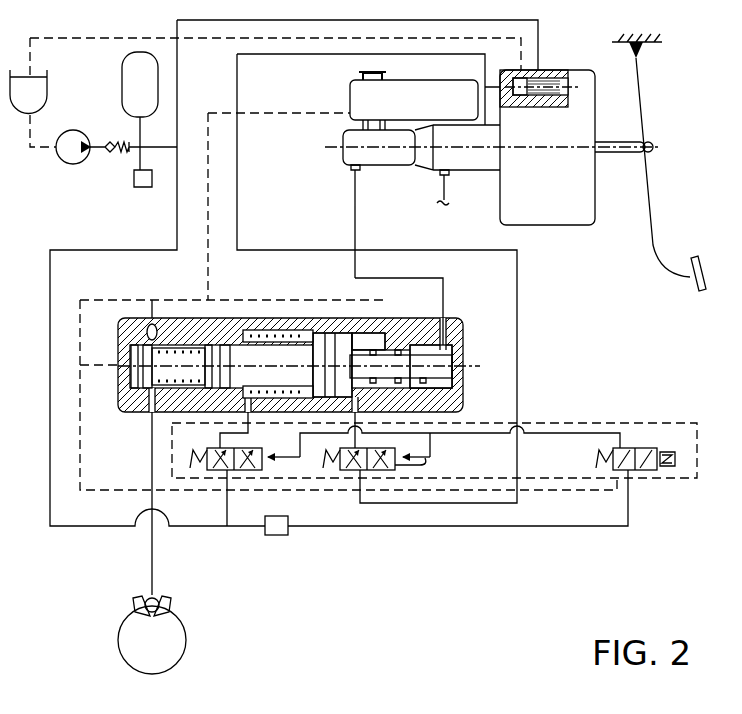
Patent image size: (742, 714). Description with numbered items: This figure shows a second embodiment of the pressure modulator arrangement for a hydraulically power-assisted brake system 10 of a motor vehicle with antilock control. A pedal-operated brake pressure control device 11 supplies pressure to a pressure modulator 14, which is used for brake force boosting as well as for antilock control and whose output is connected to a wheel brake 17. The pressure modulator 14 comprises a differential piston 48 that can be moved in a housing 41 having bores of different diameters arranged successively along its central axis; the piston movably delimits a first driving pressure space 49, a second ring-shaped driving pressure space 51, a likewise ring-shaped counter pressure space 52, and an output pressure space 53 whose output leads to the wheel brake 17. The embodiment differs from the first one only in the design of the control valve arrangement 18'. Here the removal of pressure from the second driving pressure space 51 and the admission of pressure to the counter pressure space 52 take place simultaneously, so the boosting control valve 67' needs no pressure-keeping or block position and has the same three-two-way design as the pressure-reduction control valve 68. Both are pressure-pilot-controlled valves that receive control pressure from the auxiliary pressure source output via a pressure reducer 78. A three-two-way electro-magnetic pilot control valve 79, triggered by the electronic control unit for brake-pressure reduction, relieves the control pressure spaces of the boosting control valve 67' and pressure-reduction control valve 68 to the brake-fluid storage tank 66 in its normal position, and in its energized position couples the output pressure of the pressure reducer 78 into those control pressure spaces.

The brake system 10 is at (683, 125).
The brake pressure control device 11 is at (420, 170).
The pressure modulator 14 is at (133, 318).
The wheel brake 17 is at (165, 598).
The control valve arrangement 18' is at (434, 431).
The housing 41 is at (463, 318).
The differential piston 48 is at (302, 333).
The first driving pressure space 49 is at (452, 377).
The second ring-shaped driving pressure space 51 is at (383, 335).
The counter pressure space 52 is at (262, 335).
The output pressure space 53 is at (178, 355).
The brake-fluid storage tank 66 is at (350, 95).
The boosting control valve 67' is at (394, 457).
The pressure-reduction control valve 68 is at (240, 450).
The pressure reducer 78 is at (275, 538).
The pilot control valve 79 is at (640, 448).